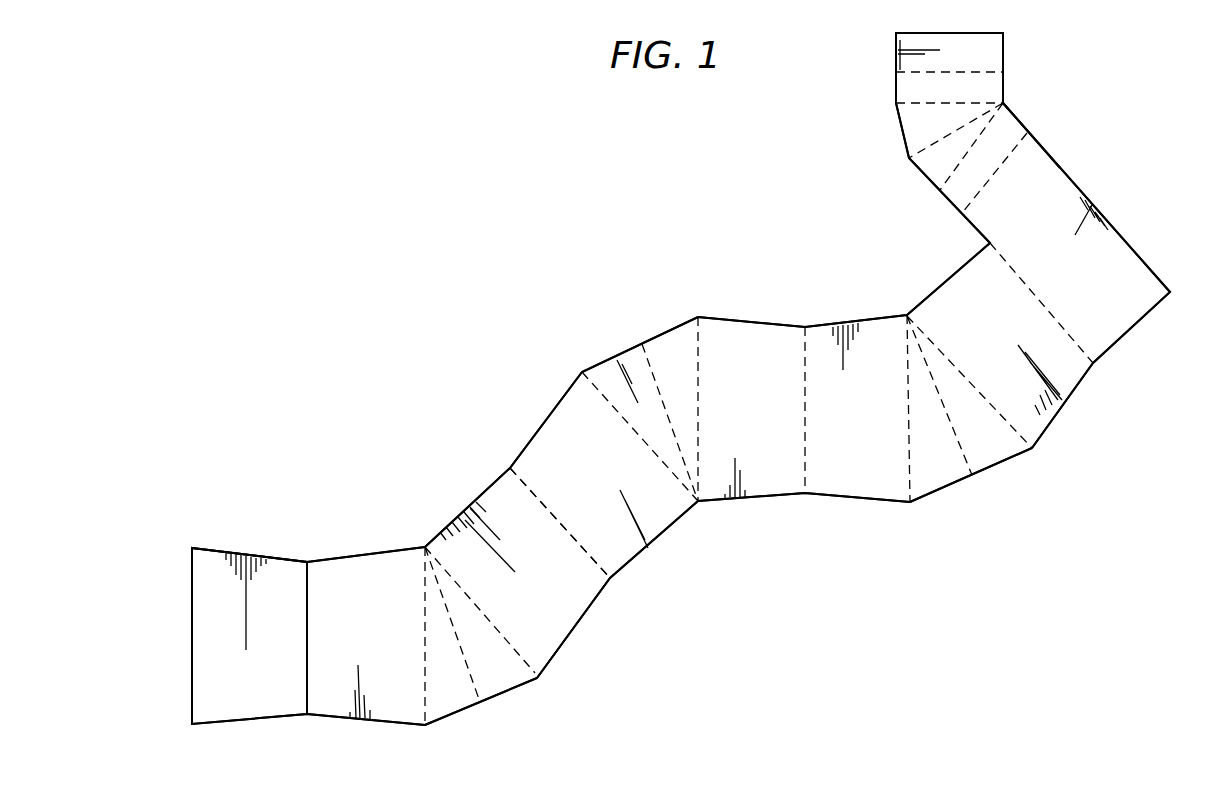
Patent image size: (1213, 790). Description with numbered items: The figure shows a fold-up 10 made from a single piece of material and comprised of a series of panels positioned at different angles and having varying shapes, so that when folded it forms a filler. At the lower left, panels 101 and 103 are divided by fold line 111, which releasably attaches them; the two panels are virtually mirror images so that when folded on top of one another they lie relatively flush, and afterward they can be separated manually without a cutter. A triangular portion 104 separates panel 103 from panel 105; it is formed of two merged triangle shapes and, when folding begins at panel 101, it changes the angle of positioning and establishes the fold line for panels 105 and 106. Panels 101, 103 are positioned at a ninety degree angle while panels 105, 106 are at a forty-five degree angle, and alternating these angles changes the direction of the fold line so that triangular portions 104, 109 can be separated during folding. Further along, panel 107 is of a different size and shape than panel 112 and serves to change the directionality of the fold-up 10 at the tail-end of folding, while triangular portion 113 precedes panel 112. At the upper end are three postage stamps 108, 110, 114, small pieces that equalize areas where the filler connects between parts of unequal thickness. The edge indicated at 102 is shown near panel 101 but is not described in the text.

The fold-up 10 is at (650, 268).
The panel 101 is at (210, 638).
The top edge fold 102 is at (240, 553).
The panel 103 is at (411, 646).
The triangular portion 104 is at (490, 688).
The panel 105 is at (548, 612).
The panel 106 is at (590, 474).
The panel 107 is at (1083, 193).
The postage stamp 108 is at (1017, 117).
The triangular portion 109 is at (910, 160).
The postage stamp 110 is at (896, 50).
The fold line 111 is at (307, 657).
The panel 112 is at (1060, 413).
The triangular portion 113 is at (985, 473).
The postage stamp 114 is at (896, 85).